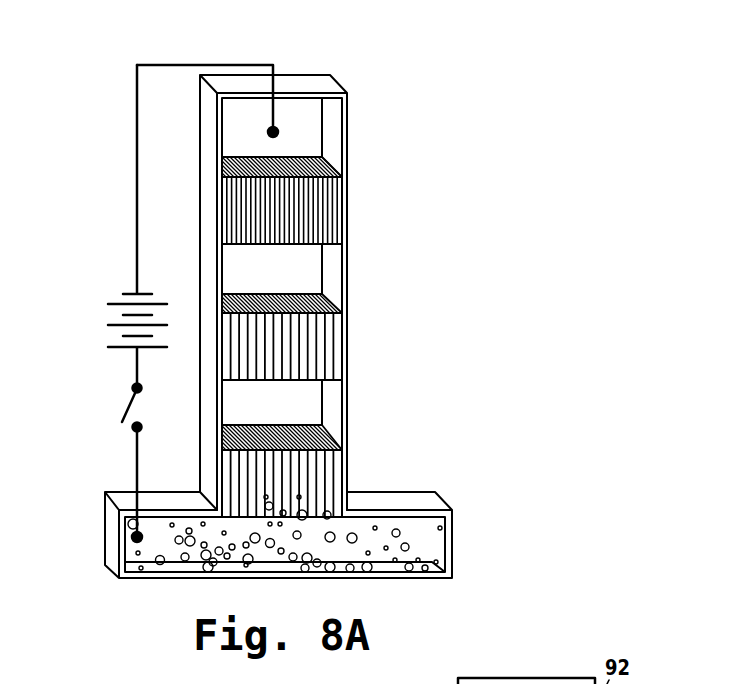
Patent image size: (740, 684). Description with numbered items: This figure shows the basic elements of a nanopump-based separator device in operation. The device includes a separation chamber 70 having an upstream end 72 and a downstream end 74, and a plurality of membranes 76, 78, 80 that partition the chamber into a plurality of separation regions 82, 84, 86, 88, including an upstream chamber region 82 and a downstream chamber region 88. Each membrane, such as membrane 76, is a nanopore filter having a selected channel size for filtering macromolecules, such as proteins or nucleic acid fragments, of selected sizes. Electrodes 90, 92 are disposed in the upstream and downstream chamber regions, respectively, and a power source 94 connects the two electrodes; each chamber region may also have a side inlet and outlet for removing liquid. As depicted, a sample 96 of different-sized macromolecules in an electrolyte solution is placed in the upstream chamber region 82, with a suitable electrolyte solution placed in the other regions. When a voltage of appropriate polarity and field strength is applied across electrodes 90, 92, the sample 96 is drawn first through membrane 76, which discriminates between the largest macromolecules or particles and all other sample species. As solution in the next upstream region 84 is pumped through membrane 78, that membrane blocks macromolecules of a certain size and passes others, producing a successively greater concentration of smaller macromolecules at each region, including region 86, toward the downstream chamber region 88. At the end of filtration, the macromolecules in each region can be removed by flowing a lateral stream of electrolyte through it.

The separation chamber 70 is at (328, 120).
The upstream end 72 is at (416, 565).
The downstream end 74 is at (234, 142).
The membrane 76 is at (348, 462).
The membrane 78 is at (343, 348).
The membrane 80 is at (343, 206).
The upstream chamber region 82 is at (316, 565).
The separation region 84 is at (236, 403).
The separation region 86 is at (236, 268).
The downstream chamber region 88 is at (312, 143).
The electrode 90 is at (133, 535).
The electrode 92 is at (275, 125).
The power source 94 is at (108, 315).
The sample 96 is at (160, 568).